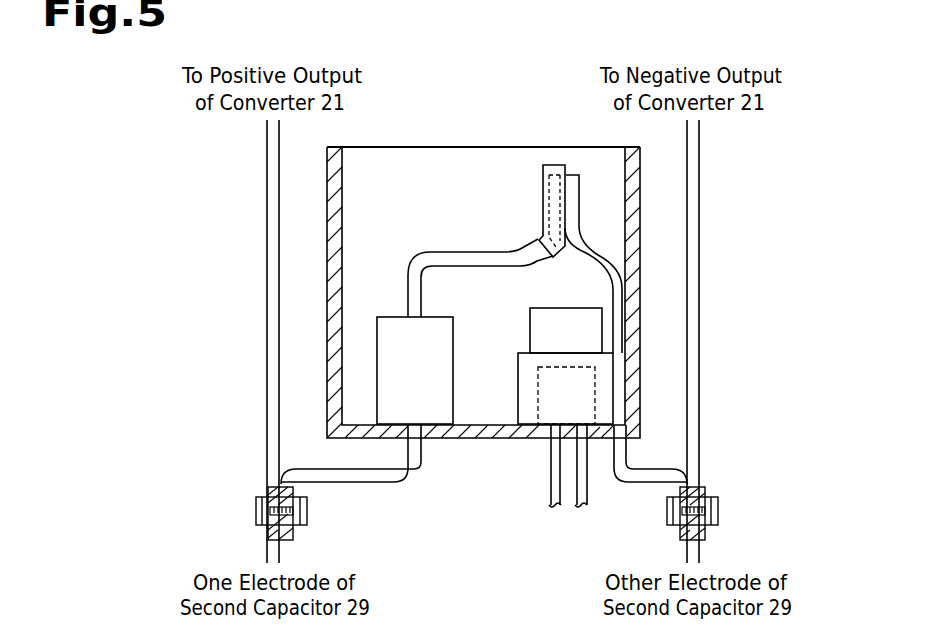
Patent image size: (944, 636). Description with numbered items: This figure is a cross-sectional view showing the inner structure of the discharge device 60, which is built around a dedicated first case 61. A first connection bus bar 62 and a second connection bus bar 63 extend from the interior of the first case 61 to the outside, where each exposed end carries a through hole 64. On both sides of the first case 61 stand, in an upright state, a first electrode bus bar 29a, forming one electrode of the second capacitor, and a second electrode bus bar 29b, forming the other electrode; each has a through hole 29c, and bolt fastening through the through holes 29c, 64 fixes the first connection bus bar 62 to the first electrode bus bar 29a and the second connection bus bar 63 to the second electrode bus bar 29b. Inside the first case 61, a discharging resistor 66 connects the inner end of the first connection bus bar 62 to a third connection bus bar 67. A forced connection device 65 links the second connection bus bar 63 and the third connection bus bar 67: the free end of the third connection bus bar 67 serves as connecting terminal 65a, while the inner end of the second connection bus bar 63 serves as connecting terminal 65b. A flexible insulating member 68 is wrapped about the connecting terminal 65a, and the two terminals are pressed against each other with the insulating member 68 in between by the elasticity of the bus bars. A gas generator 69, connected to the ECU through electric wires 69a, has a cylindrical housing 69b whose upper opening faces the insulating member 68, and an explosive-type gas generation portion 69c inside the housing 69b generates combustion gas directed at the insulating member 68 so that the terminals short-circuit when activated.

The discharge device 60 is at (478, 118).
The first case 61 is at (535, 147).
The first connection bus bar 62 is at (325, 483).
The second connection bus bar 63 is at (642, 483).
The through hole 64 is at (296, 510).
The forced connection device 65 is at (506, 252).
The connecting terminal 65a is at (549, 179).
The connecting terminal 65b is at (579, 195).
The discharging resistor 66 is at (385, 317).
The third connection bus bar 67 is at (480, 267).
The insulating member 68 is at (543, 210).
The gas generator 69 is at (533, 382).
The electric wires 69a is at (578, 492).
The housing 69b is at (565, 308).
The gas generation portion 69c is at (538, 390).
The first electrode bus bar 29a is at (267, 190).
The second electrode bus bar 29b is at (699, 183).
The through hole 29c is at (268, 520).